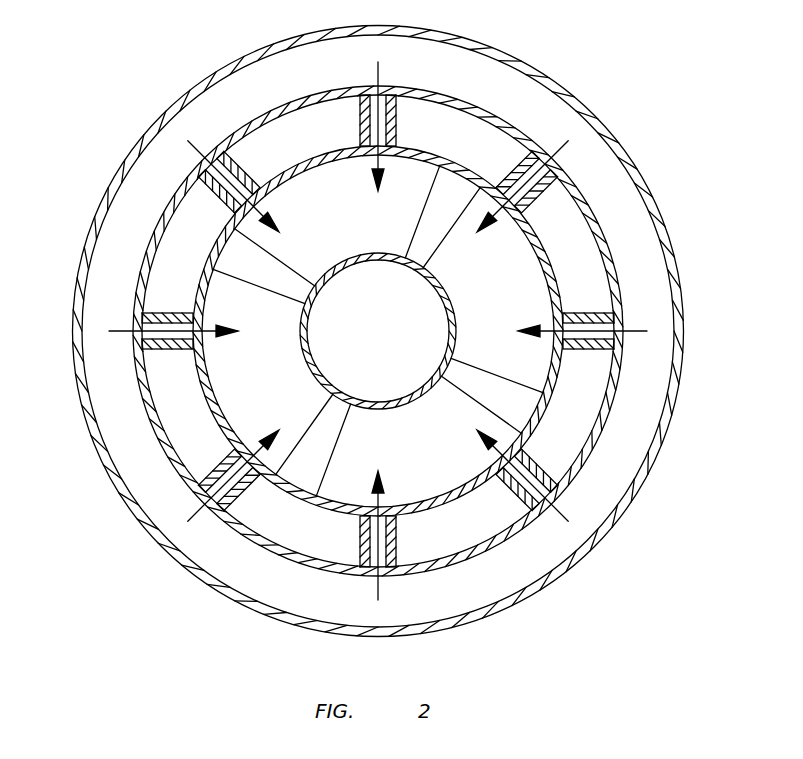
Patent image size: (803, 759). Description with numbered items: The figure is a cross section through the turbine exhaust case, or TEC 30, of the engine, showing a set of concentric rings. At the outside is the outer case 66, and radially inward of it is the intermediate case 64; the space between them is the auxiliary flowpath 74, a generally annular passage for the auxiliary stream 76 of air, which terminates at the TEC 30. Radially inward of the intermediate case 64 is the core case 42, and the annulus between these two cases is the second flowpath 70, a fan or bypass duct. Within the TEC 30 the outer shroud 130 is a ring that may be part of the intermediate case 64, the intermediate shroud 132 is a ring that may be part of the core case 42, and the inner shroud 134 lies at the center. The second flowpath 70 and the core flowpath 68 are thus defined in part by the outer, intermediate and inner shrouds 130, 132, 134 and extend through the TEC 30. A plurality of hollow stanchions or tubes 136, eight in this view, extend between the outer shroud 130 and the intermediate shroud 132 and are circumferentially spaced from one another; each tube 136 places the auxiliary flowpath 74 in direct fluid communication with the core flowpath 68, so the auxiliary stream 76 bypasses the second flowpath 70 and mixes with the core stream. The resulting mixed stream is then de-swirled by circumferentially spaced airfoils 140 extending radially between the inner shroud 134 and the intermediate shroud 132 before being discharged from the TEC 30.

The turbine exhaust case 30 is at (626, 268).
The core case 42 is at (460, 488).
The intermediate case 64 is at (618, 378).
The outer case 66 is at (684, 321).
The core flowpath 68 is at (343, 227).
The second flowpath 70 is at (308, 147).
The auxiliary flowpath 74 is at (305, 81).
The auxiliary stream 76 is at (562, 146).
The outer shroud 130 is at (156, 440).
The intermediate shroud 132 is at (215, 402).
The inner shroud 134 is at (447, 284).
The hollow stanchions or tubes 136 is at (544, 197).
The airfoils 140 is at (263, 290).